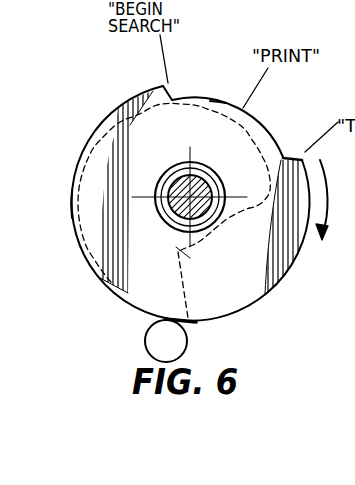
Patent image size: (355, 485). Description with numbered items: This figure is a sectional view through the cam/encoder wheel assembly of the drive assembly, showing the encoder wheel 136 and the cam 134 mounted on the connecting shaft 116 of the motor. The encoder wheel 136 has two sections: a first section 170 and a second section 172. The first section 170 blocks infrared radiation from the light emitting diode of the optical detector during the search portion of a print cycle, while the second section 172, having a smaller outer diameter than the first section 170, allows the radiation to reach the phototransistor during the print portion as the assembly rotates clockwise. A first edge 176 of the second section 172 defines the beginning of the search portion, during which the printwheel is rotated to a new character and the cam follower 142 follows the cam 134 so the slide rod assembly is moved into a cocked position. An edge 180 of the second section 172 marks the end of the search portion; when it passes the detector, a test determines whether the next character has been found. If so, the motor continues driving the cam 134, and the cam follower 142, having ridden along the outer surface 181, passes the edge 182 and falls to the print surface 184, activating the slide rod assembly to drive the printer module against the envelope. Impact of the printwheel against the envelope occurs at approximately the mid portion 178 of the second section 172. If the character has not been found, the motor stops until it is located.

The connecting shaft 116 is at (177, 223).
The cam 134 is at (86, 167).
The encoder wheel 136 is at (281, 253).
The cam follower 142 is at (145, 337).
The first section 170 is at (80, 252).
The second section 172 is at (218, 102).
The first edge 176 is at (171, 90).
The mid portion 178 is at (252, 117).
The edge 180 is at (289, 156).
The outer surface 181 is at (72, 204).
The edge 182 is at (195, 323).
The print surface 184 is at (182, 253).